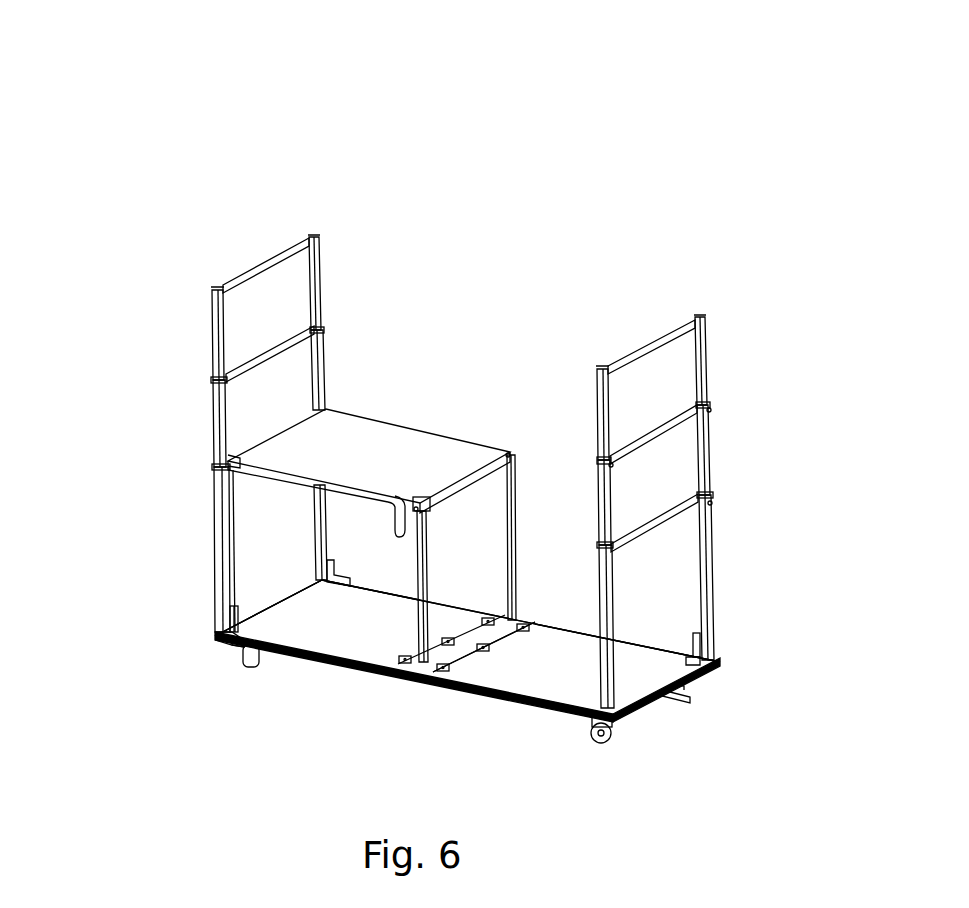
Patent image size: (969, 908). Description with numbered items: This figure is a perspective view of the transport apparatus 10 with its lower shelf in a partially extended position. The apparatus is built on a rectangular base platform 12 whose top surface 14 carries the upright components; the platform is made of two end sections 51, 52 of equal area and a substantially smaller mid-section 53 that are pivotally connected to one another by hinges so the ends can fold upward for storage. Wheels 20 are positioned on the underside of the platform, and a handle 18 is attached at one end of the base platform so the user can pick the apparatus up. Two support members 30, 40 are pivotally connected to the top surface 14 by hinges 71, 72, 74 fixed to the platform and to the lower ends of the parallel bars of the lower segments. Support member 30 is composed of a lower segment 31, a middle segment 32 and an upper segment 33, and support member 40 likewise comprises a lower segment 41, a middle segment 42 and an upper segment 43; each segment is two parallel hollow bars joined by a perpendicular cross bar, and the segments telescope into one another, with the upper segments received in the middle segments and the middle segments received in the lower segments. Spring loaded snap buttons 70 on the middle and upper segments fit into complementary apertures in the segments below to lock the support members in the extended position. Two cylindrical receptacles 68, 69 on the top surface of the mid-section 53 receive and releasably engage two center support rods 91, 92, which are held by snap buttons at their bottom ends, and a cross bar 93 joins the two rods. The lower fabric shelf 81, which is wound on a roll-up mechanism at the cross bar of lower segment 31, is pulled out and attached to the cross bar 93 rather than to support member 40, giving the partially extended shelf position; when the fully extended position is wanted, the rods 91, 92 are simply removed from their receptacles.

The transport apparatus 10 is at (170, 96).
The base platform 12 is at (321, 682).
The top surface 14 is at (520, 668).
The handle 18 is at (688, 702).
The wheels 20 is at (247, 663).
The support member 30 is at (190, 454).
The lower segment 31 is at (220, 512).
The middle segment 32 is at (215, 402).
The upper segment 33 is at (318, 290).
The support member 40 is at (745, 482).
The lower segment 41 is at (615, 658).
The middle segment 42 is at (636, 447).
The upper segment 43 is at (598, 405).
The end section 51 is at (300, 620).
The end section 52 is at (555, 670).
The mid-section 53 is at (477, 678).
The cylindrical receptacle 68 is at (405, 668).
The cylindrical receptacle 69 is at (515, 622).
The spring loaded snap buttons 70 is at (598, 460).
The hinge 71 is at (217, 634).
The hinge 72 is at (342, 578).
The hinge 74 is at (690, 697).
The lower shelf section 81 is at (365, 447).
The center support rod 91 is at (425, 620).
The center support rod 92 is at (508, 540).
The cross bar 93 is at (422, 497).